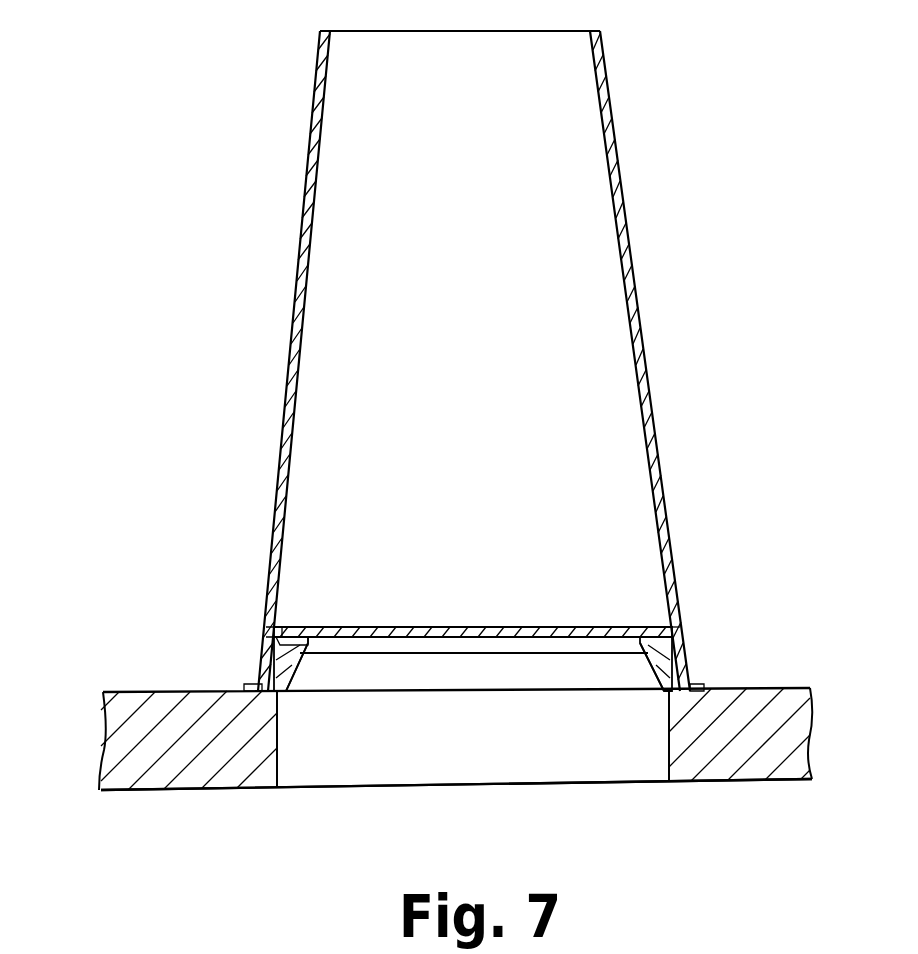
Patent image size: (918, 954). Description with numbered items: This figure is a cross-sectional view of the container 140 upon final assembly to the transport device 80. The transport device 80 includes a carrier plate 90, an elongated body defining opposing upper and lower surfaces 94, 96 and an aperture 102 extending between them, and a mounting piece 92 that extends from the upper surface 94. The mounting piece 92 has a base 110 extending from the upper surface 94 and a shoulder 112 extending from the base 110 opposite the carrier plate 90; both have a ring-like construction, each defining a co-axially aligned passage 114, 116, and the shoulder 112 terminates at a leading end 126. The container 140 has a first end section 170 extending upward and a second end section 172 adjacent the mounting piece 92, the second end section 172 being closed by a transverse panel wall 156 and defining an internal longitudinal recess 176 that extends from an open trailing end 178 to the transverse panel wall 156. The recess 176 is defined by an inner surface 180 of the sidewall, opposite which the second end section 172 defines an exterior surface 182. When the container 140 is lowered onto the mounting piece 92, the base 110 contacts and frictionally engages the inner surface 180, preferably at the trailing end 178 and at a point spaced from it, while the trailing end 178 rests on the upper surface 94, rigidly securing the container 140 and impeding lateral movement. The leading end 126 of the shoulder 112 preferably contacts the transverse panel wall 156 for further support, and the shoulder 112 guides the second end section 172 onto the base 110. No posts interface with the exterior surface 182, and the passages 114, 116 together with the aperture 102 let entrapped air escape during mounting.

The transport device 80 is at (108, 808).
The carrier plate 90 is at (192, 791).
The mounting piece 92 is at (310, 675).
The upper surface 94 is at (148, 691).
The lower surface 96 is at (746, 781).
The aperture 102 is at (669, 760).
The base 110 is at (261, 684).
The shoulder 112 is at (310, 650).
The passage 114 is at (648, 672).
The passage 116 is at (642, 650).
The leading end 126 is at (292, 628).
The container 140 is at (672, 127).
The transverse panel wall 156 is at (472, 627).
The first end section 170 is at (310, 112).
The second end section 172 is at (716, 637).
The longitudinal recess 176 is at (690, 632).
The trailing end 178 is at (262, 693).
The inner surface 180 is at (272, 628).
The exterior surface 182 is at (698, 666).